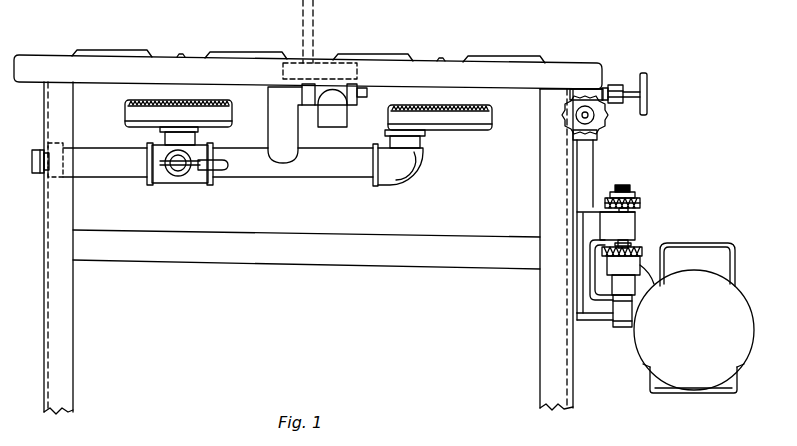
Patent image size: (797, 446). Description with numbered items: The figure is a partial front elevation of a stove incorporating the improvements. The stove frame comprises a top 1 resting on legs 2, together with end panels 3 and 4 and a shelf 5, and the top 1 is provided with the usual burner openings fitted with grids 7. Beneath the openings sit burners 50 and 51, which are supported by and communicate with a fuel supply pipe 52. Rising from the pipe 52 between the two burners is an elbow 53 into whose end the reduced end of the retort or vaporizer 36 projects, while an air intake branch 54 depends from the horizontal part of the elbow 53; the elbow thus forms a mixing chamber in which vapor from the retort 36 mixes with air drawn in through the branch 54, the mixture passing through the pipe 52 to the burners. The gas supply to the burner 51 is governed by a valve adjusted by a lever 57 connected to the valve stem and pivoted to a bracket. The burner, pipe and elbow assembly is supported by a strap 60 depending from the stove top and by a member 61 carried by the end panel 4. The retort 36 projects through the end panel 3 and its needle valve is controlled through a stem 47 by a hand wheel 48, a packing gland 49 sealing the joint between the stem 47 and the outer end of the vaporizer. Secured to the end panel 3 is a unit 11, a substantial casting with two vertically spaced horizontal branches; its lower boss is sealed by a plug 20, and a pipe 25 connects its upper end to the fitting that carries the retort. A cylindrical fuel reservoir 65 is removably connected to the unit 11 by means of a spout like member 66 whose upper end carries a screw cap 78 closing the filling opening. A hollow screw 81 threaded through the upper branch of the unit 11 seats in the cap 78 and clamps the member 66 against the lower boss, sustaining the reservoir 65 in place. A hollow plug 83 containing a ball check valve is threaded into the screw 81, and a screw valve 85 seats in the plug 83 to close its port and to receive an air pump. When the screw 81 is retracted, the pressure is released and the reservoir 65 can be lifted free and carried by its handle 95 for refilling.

The top 1 is at (563, 72).
The legs 2 is at (73, 340).
The end panel 3 is at (577, 172).
The end panel 4 is at (45, 219).
The shelf 5 is at (353, 258).
The grids 7 is at (129, 50).
The unit 11 is at (588, 281).
The plug 20 is at (622, 330).
The pipe 25 is at (587, 149).
The retort or vaporizer 36 is at (532, 92).
The valve stem 47 is at (636, 101).
The hand wheel 48 is at (650, 79).
The packing gland 49 is at (622, 86).
The burner 50 is at (477, 121).
The burner 51 is at (133, 118).
The fuel supply pipe 52 is at (338, 178).
The elbow 53 is at (274, 113).
The air intake branch 54 is at (330, 119).
The lever 57 is at (222, 172).
The strap 60 is at (303, 89).
The member 61 is at (45, 141).
The fuel reservoir 65 is at (694, 331).
The spout like member 66 is at (648, 291).
The screw cap 78 is at (640, 251).
The hollow screw 81 is at (630, 233).
The hollow plug 83 is at (638, 204).
The screw valve 85 is at (624, 188).
The handle 95 is at (706, 245).